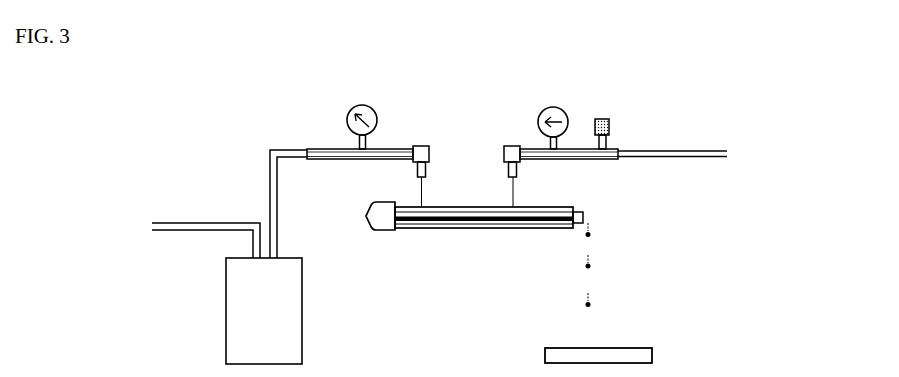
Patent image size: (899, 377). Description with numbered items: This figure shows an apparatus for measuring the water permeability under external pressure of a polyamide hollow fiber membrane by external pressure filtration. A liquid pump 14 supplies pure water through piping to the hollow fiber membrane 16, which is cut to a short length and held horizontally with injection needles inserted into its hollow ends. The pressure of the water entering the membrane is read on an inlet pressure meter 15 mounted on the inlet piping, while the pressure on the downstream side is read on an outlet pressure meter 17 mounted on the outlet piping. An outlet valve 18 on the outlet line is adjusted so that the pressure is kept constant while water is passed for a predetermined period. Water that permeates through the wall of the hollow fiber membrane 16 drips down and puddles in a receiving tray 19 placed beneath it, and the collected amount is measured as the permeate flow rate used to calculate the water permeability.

The liquid pump 14 is at (264, 311).
The inlet pressure meter 15 is at (360, 110).
The hollow fiber membrane 16 is at (474, 235).
The outlet pressure meter 17 is at (553, 110).
The outlet valve 18 is at (617, 132).
The receiving tray 19 is at (625, 356).